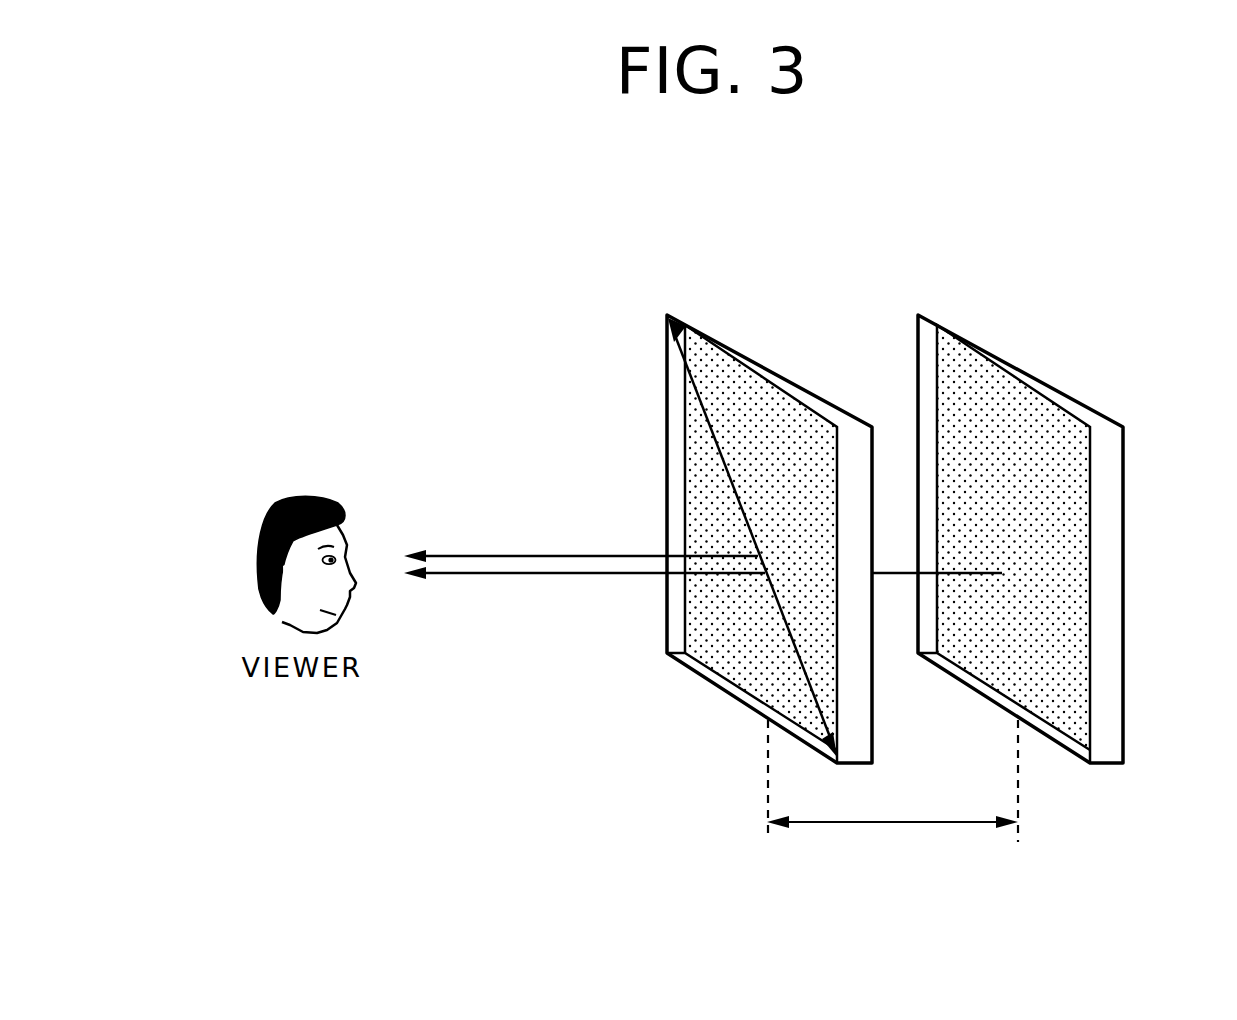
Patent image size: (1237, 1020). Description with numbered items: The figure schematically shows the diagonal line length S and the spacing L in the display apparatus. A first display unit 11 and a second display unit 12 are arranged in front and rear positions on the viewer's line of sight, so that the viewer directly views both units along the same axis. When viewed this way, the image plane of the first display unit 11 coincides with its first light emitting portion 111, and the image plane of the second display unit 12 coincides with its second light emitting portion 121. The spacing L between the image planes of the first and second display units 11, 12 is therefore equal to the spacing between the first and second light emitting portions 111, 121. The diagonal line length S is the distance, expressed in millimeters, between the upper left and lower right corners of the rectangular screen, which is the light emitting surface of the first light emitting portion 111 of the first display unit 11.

The first display unit 11 is at (755, 344).
The second display unit 12 is at (1005, 344).
The first light emitting portion 111 is at (728, 378).
The second light emitting portion 121 is at (978, 378).
The length of diagonal line S is at (812, 697).
The spacing L is at (892, 797).